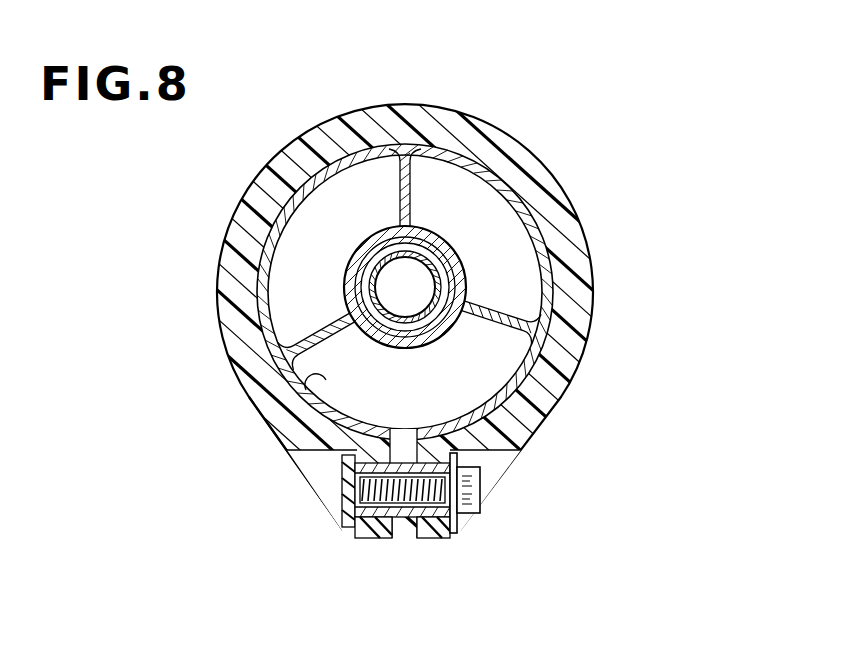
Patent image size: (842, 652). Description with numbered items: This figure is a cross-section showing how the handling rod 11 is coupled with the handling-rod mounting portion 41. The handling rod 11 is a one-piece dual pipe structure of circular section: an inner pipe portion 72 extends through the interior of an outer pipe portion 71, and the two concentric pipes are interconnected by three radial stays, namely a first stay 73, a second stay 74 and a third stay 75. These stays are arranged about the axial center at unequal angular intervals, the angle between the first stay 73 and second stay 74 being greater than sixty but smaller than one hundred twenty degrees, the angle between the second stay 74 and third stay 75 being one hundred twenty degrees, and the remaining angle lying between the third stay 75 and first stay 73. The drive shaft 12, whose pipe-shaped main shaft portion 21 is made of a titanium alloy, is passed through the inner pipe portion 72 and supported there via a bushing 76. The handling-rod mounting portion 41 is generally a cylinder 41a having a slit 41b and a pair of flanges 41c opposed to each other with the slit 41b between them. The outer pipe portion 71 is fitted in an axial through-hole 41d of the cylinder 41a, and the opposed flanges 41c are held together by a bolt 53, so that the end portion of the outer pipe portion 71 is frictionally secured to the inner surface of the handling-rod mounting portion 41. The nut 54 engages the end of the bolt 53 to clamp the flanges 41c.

The handling rod 11 is at (455, 142).
The outer pipe portion 71 is at (500, 160).
The inner pipe portion 72 is at (462, 262).
The first stay 73 is at (396, 180).
The second stay 74 is at (316, 334).
The third stay 75 is at (492, 327).
The bushing 76 is at (443, 237).
The main shaft portion 21 is at (554, 283).
The drive shaft 12 is at (405, 287).
The handling-rod mounting portion 41 is at (218, 315).
The cylinder 41a is at (247, 368).
The slit 41b is at (403, 540).
The flanges 41c is at (374, 540).
The axial through-hole 41d is at (267, 423).
The bolt 53 is at (482, 488).
The bolt 54 is at (337, 513).